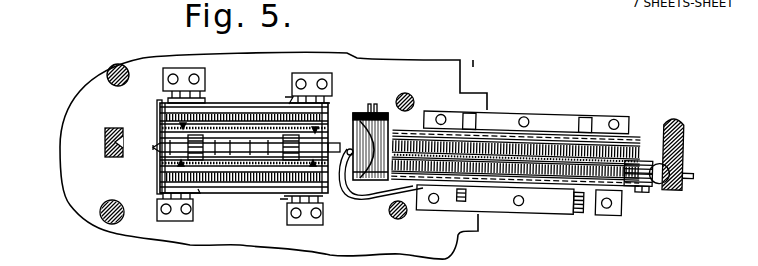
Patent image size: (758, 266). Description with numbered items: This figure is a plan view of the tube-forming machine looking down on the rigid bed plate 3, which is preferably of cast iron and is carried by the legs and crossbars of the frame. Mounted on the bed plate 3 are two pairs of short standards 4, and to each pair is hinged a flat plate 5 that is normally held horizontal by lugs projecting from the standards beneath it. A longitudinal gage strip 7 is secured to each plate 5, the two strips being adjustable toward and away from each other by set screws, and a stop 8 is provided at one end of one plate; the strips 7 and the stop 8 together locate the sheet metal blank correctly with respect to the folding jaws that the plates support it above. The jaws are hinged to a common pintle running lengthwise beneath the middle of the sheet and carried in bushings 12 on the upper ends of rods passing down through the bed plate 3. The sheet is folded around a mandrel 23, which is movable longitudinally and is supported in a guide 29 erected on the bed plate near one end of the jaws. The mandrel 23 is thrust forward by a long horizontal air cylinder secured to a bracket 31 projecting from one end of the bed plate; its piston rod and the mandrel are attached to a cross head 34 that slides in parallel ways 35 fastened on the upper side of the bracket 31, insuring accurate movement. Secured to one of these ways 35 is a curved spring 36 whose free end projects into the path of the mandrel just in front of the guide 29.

The bed plate 3 is at (64, 188).
The standards 4 is at (205, 80).
The flat plate 5 is at (253, 109).
The gage strip 7 is at (326, 128).
The stop 8 is at (158, 120).
The bushings 12 is at (190, 150).
The mandrel 23 is at (508, 153).
The guide 29 is at (368, 112).
The bracket 31 is at (543, 211).
The cross head 34 is at (636, 156).
The ways 35 is at (532, 132).
The curved spring 36 is at (358, 199).